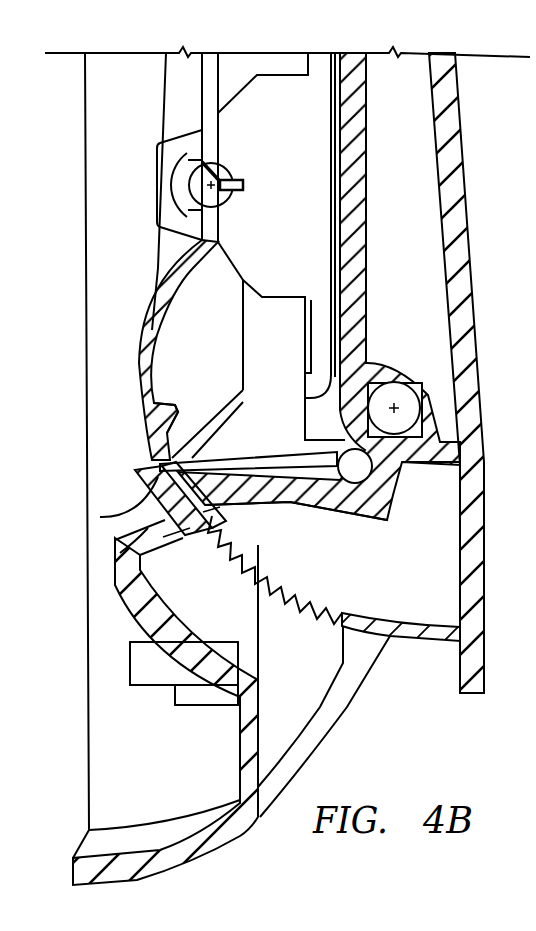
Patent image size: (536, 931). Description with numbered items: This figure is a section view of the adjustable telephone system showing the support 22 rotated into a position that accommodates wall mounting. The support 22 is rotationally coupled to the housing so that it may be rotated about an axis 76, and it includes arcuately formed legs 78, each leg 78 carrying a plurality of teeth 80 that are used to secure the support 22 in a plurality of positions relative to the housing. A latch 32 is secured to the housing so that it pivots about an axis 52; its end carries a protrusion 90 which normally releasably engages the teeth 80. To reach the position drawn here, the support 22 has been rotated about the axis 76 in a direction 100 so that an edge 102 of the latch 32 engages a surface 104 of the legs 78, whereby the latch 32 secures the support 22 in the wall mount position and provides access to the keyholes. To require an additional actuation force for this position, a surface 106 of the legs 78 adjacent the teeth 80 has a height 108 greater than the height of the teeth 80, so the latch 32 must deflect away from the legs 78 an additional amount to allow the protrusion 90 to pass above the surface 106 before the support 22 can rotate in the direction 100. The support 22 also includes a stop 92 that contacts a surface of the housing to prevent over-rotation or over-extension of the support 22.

The support 22 is at (487, 640).
The latch 32 is at (144, 324).
The axis 52 is at (189, 184).
The axis 76 is at (396, 408).
The legs 78 is at (356, 628).
The teeth 80 is at (250, 584).
The protrusion 90 is at (172, 405).
The stop 92 is at (460, 670).
The direction 100 is at (447, 380).
The edge 102 is at (142, 466).
The surface 104 is at (200, 450).
The surface 106 is at (122, 516).
The height 108 is at (225, 514).